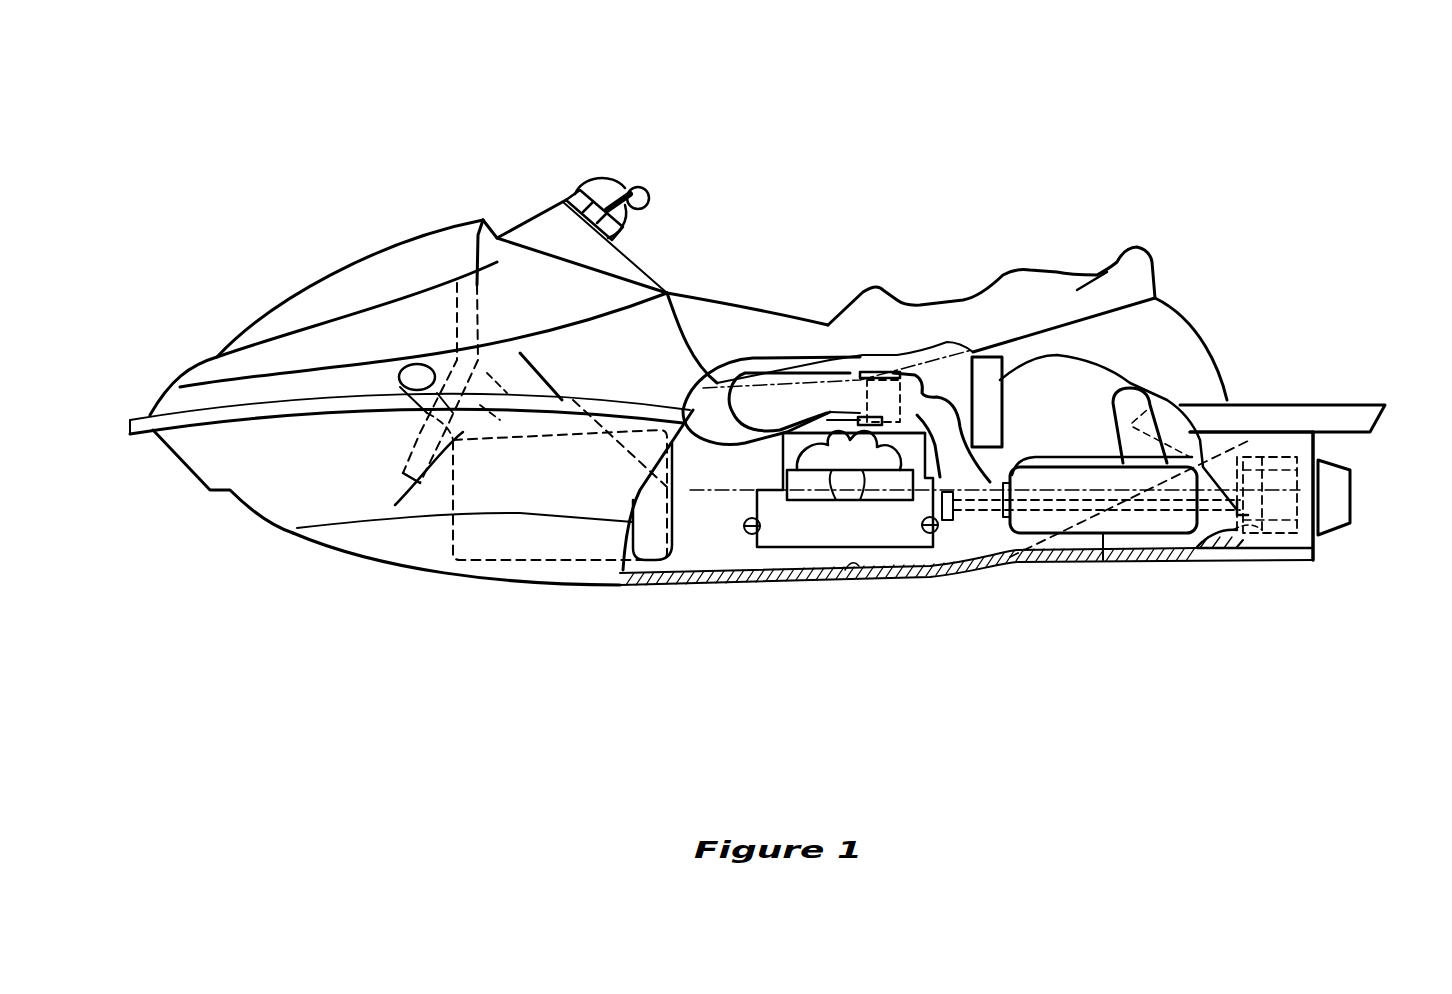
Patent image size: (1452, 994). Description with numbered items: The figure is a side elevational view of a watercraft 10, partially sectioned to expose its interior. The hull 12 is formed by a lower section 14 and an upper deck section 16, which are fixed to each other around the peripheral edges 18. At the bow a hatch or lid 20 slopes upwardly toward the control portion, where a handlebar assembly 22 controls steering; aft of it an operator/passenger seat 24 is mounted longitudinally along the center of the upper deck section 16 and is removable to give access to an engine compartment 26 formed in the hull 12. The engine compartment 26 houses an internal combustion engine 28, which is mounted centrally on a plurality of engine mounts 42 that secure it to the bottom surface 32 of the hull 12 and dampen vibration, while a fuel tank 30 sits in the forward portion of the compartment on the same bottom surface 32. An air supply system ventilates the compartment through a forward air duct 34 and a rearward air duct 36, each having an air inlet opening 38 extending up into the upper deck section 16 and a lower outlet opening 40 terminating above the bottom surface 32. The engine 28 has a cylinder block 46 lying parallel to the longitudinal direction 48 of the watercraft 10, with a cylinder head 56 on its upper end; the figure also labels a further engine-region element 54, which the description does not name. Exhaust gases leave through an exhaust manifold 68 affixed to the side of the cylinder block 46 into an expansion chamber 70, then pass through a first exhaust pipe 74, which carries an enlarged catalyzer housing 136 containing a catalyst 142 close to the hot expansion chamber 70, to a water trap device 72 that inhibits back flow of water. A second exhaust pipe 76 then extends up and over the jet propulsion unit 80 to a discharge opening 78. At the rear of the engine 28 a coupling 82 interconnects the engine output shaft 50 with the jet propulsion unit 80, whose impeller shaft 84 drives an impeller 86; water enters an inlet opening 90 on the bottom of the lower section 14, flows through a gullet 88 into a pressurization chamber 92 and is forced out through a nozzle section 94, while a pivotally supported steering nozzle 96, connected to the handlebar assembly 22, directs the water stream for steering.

The watercraft 10 is at (1053, 215).
The hull 12 is at (200, 343).
The lower section 14 is at (413, 567).
The upper deck section 16 is at (650, 340).
The peripheral edges 18 is at (217, 423).
The hatch or lid 20 is at (370, 253).
The handlebar assembly 22 is at (636, 185).
The operator/passenger seat 24 is at (810, 313).
The engine compartment 26 is at (690, 477).
The internal combustion engine 28 is at (813, 552).
The fuel tank 30 is at (667, 573).
The bottom surface 32 is at (857, 572).
The air duct 34 is at (410, 430).
The air duct 36 is at (1037, 363).
The air inlet opening 38 is at (463, 283).
The lower outlet opening 40 is at (395, 505).
The engine mounts 42 is at (750, 540).
The cylinder block 46 is at (780, 458).
The longitudinal direction 48 is at (868, 772).
The engine output shaft 50 is at (947, 522).
The engine compartment 54 is at (823, 553).
The cylinder head 56 is at (683, 407).
The exhaust manifold 68 is at (840, 487).
The expansion chamber 70 is at (773, 367).
The water trap device 72 is at (1103, 555).
The first exhaust pipe 74 is at (951, 368).
The second exhaust pipe 76 is at (1133, 378).
The discharge opening 78 is at (1297, 540).
The jet propulsion unit 80 is at (1103, 452).
The coupling 82 is at (963, 513).
The impeller shaft 84 is at (1160, 547).
The impeller 86 is at (1247, 430).
The gullet 88 is at (1043, 533).
The inlet opening 90 is at (1063, 567).
The pressurization chamber 92 is at (1283, 447).
The nozzle section 94 is at (1317, 563).
The steering nozzle 96 is at (1340, 533).
The catalyzer housing 136 is at (878, 363).
The catalyst 142 is at (893, 370).